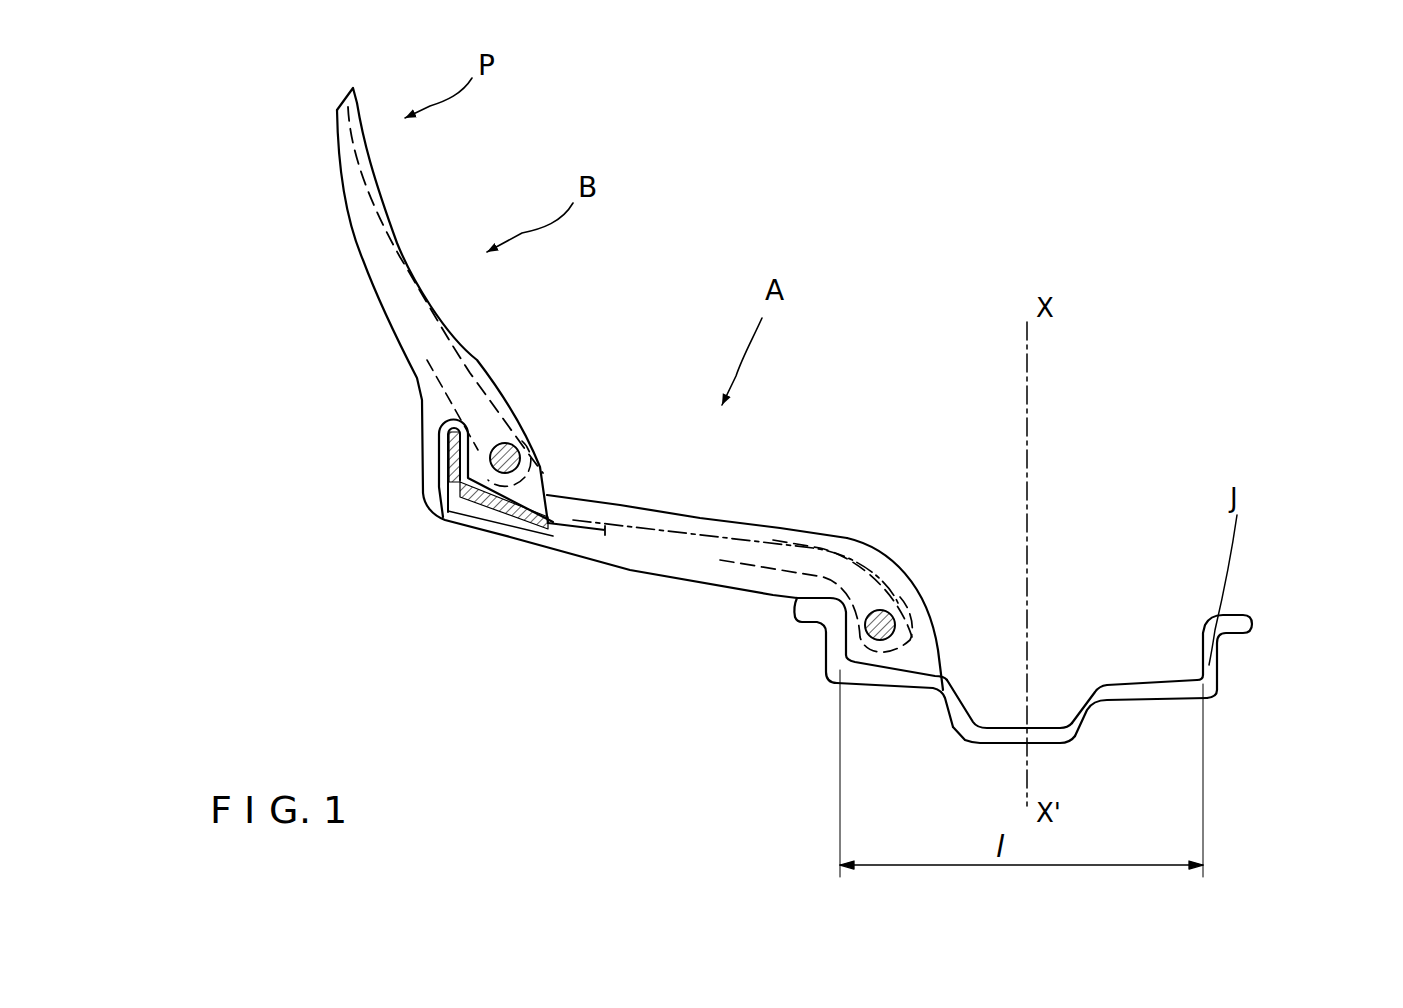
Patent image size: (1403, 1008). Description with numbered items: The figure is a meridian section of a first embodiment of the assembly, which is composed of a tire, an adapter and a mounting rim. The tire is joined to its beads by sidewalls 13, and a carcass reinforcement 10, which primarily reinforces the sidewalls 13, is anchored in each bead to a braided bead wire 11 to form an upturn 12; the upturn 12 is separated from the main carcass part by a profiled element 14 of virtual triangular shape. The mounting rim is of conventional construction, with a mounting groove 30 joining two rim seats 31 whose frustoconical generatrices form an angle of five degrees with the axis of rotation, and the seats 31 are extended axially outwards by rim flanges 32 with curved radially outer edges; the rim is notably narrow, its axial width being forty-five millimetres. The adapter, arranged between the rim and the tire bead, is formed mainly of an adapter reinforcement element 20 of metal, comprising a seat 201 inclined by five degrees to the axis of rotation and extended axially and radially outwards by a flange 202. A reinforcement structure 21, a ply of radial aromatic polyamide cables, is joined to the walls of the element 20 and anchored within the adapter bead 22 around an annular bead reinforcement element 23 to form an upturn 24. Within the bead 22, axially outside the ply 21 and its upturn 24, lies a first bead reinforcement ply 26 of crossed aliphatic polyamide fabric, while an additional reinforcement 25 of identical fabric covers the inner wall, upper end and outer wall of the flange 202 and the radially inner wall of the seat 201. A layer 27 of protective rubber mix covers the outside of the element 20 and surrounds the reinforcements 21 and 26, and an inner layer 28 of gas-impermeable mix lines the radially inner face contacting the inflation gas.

The carcass reinforcement 10 is at (440, 305).
The bead wire 11 is at (525, 463).
The upturn 12 is at (433, 372).
The sidewall 13 is at (368, 240).
The profiled element 14 is at (467, 387).
The adapter reinforcement element 20 is at (432, 523).
The seat 201 is at (510, 533).
The flange 202 is at (467, 450).
The reinforcement structure 21 is at (755, 557).
The adapter bead 22 is at (853, 540).
The annular bead reinforcement element 23 is at (888, 612).
The upturn 24 is at (787, 578).
The additional reinforcement 25 is at (573, 532).
The first bead reinforcement ply 26 is at (797, 543).
The layer of protective rubber mix 27 is at (633, 553).
The inner layer 28 is at (630, 520).
The mounting groove 30 is at (1048, 715).
The rim seat 31 is at (935, 668).
The rim flange 32 is at (1212, 661).